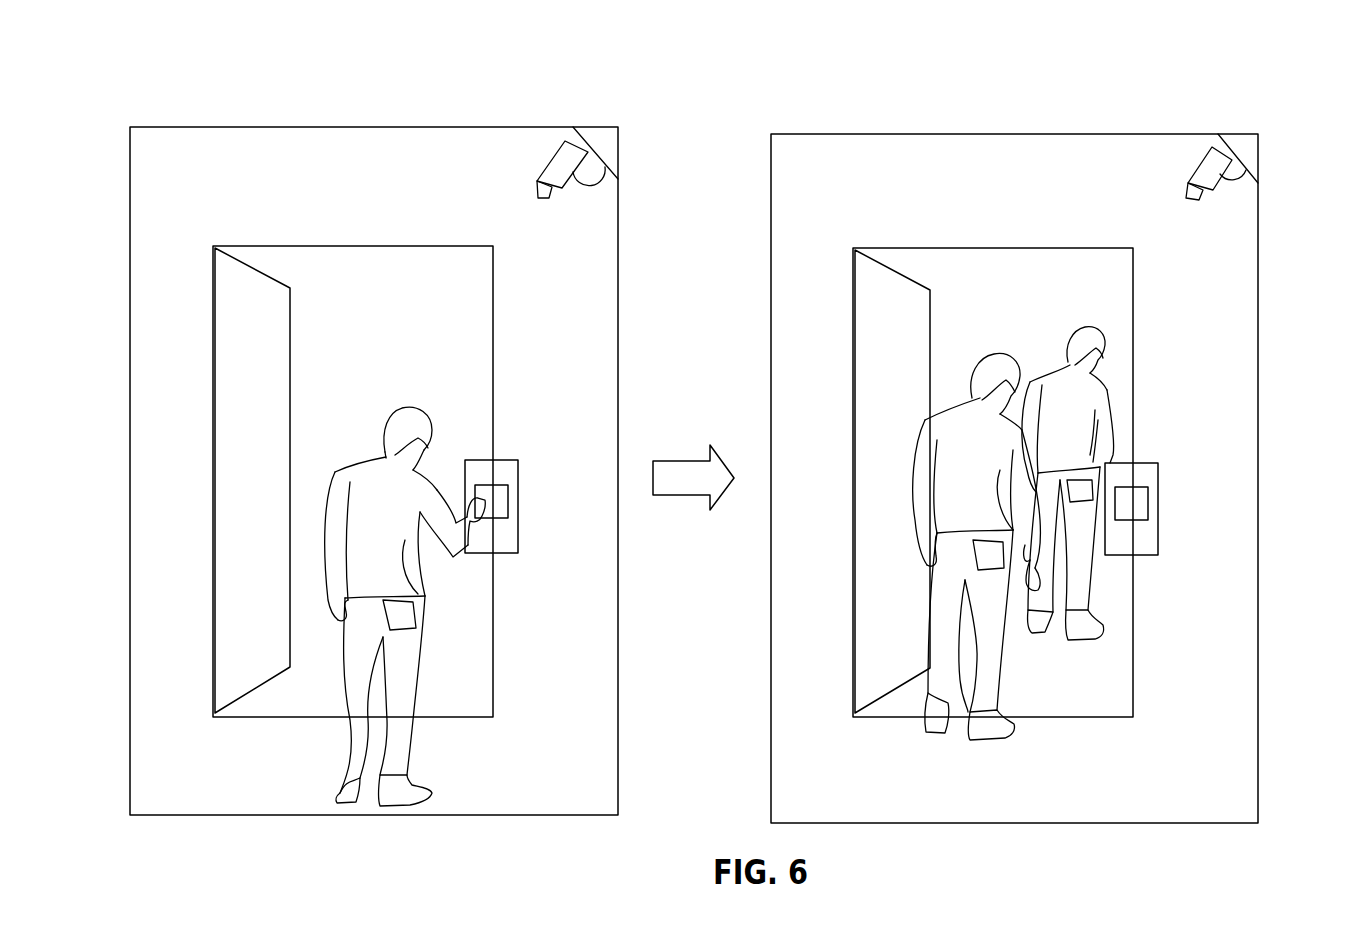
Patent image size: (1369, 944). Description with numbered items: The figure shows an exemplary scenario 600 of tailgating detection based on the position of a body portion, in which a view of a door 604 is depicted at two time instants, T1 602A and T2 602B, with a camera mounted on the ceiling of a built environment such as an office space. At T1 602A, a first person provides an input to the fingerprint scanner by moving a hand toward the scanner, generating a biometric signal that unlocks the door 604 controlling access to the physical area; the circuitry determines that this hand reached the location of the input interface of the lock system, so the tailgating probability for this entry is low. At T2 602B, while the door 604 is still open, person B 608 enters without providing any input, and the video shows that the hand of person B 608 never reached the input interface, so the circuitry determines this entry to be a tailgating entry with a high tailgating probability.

The exemplary scenario 600 is at (1296, 83).
The time instant T1 602A is at (395, 445).
The time instant T2 602B is at (1044, 449).
The door 604 is at (495, 613).
The person B 608 is at (993, 729).